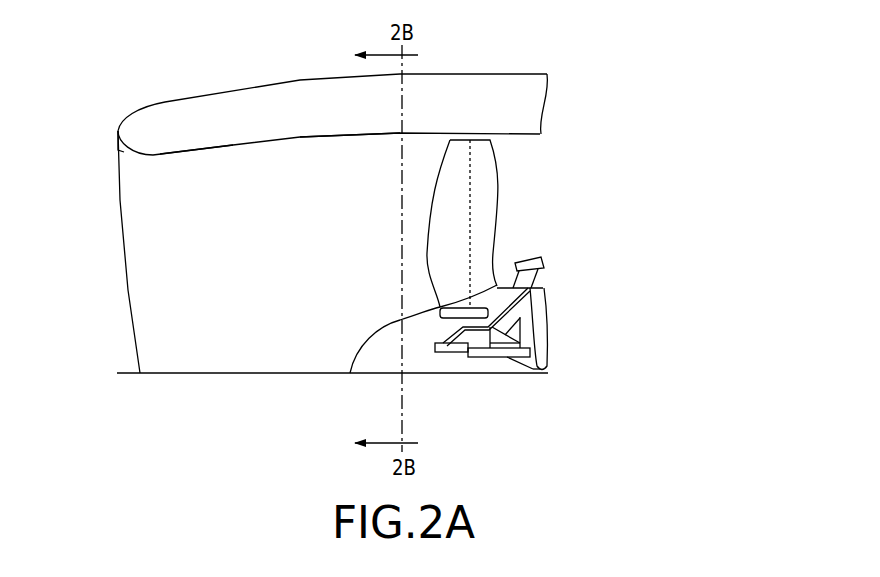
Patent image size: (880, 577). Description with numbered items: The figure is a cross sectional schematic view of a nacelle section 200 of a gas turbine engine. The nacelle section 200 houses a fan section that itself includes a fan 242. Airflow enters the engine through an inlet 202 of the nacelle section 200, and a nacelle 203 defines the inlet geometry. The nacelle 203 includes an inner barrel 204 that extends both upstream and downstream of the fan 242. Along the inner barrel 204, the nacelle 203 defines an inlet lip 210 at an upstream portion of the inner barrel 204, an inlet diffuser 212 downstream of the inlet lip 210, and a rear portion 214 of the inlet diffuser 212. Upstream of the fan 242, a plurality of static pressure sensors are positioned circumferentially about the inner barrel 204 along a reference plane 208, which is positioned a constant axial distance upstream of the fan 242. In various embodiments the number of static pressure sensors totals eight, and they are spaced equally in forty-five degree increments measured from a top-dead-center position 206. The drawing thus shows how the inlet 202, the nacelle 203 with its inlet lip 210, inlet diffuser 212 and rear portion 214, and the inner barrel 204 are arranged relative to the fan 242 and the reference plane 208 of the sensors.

The nacelle section 200 is at (204, 72).
The inlet 202 is at (284, 309).
The nacelle 203 is at (458, 72).
The inner barrel 204 is at (153, 157).
The top-dead-center position 206 is at (383, 106).
The reference plane 208 is at (403, 272).
The inlet lip 210 is at (118, 151).
The inlet diffuser 212 is at (233, 150).
The rear portion 214 is at (362, 135).
The fan 242 is at (482, 230).